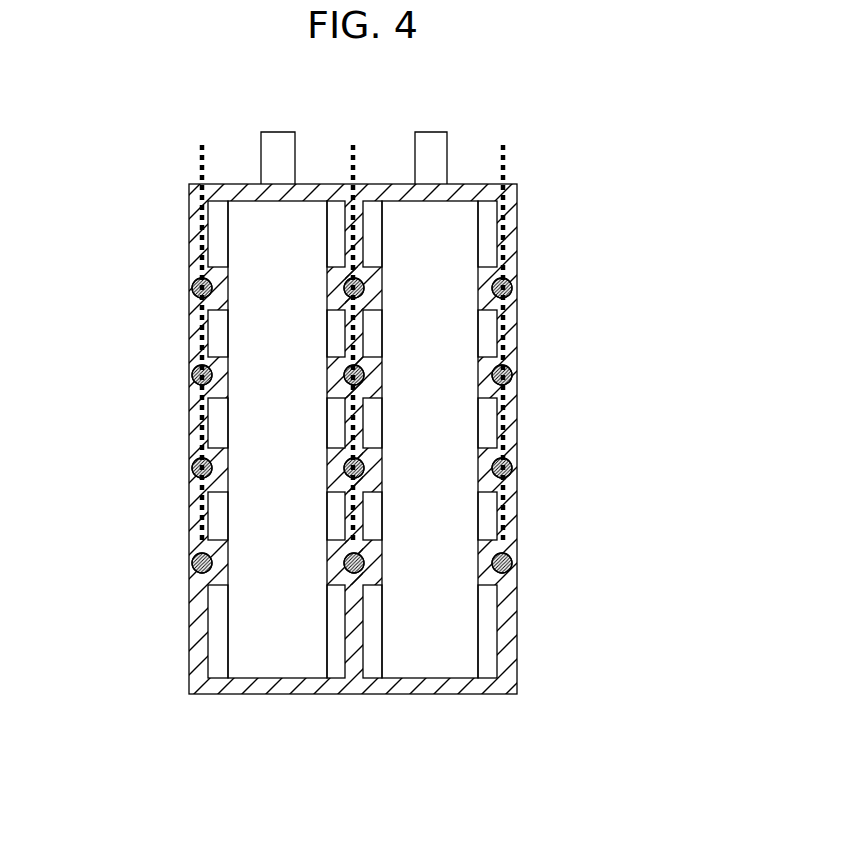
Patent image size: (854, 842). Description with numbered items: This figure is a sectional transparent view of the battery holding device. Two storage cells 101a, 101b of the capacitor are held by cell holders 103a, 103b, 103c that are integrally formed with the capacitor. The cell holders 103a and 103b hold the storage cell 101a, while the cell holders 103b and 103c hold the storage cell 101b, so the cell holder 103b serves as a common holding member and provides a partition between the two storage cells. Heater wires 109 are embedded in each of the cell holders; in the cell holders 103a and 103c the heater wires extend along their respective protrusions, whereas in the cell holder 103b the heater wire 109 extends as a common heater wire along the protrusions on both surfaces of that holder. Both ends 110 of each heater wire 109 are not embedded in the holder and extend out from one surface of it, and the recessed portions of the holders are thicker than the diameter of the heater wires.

The storage cell 101a is at (260, 660).
The storage cell 101b is at (445, 662).
The cell holder 103a is at (189, 670).
The cell holder 103b is at (360, 695).
The cell holder 103c is at (517, 667).
The heater wire 109 is at (200, 289).
The ends of the heater wire 110 is at (200, 158).